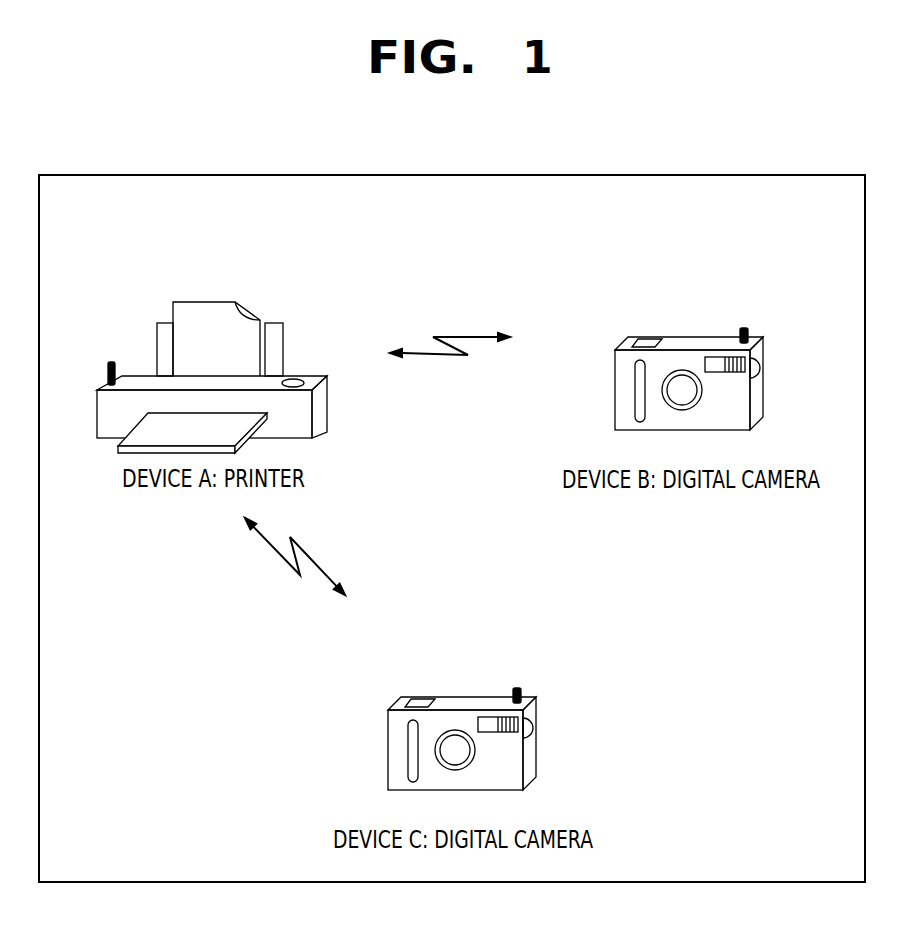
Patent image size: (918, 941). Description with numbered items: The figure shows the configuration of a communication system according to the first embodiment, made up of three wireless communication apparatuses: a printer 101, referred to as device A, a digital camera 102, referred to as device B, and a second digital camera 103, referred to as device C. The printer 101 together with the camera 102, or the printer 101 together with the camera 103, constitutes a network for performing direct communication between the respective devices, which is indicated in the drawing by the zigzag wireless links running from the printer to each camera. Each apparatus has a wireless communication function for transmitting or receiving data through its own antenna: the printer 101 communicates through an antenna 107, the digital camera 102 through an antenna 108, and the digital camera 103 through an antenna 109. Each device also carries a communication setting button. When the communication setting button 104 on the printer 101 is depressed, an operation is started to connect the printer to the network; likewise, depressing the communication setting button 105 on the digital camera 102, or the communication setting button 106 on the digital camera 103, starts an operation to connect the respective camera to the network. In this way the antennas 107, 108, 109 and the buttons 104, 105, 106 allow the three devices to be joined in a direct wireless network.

The printer 101 is at (202, 339).
The digital camera 102 is at (700, 340).
The digital camera 103 is at (473, 700).
The communication setting button 104 is at (290, 377).
The communication setting button 105 is at (767, 367).
The communication setting button 106 is at (540, 727).
The antenna 107 is at (113, 360).
The antenna 108 is at (745, 328).
The antenna 109 is at (518, 688).